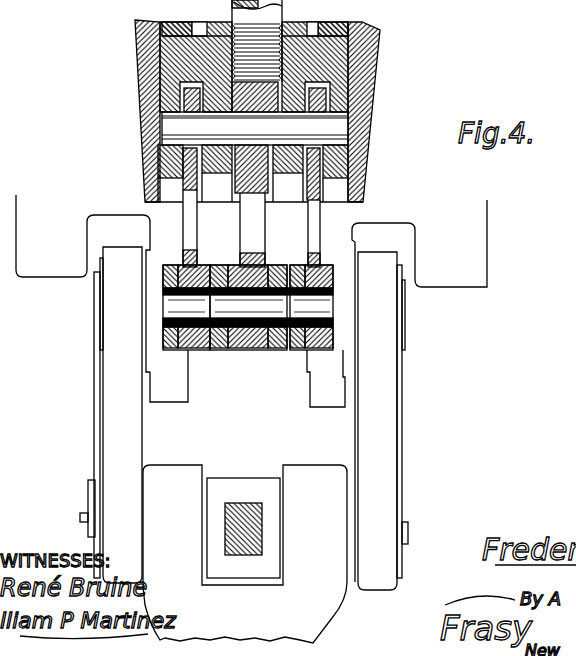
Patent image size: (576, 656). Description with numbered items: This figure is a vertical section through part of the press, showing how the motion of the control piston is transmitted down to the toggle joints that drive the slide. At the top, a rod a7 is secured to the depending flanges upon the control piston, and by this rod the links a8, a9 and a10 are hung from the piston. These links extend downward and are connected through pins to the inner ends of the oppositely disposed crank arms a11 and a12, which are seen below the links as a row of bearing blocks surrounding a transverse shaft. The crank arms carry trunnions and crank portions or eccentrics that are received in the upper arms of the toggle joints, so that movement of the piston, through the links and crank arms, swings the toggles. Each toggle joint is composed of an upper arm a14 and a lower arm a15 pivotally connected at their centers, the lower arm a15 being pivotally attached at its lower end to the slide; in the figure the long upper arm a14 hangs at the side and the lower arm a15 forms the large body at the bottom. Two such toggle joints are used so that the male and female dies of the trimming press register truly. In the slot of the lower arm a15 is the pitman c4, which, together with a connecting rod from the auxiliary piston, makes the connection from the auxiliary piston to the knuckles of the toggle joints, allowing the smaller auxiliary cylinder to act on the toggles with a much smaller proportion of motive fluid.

The rod a7 is at (340, 118).
The link a8 is at (183, 212).
The link a9 is at (266, 225).
The link a10 is at (320, 218).
The crank arm a11 is at (288, 352).
The crank arm a12 is at (216, 350).
The upper arm of toggle joint a14 is at (387, 438).
The lower arm of toggle joint a15 is at (245, 554).
The pitman c4 is at (240, 503).